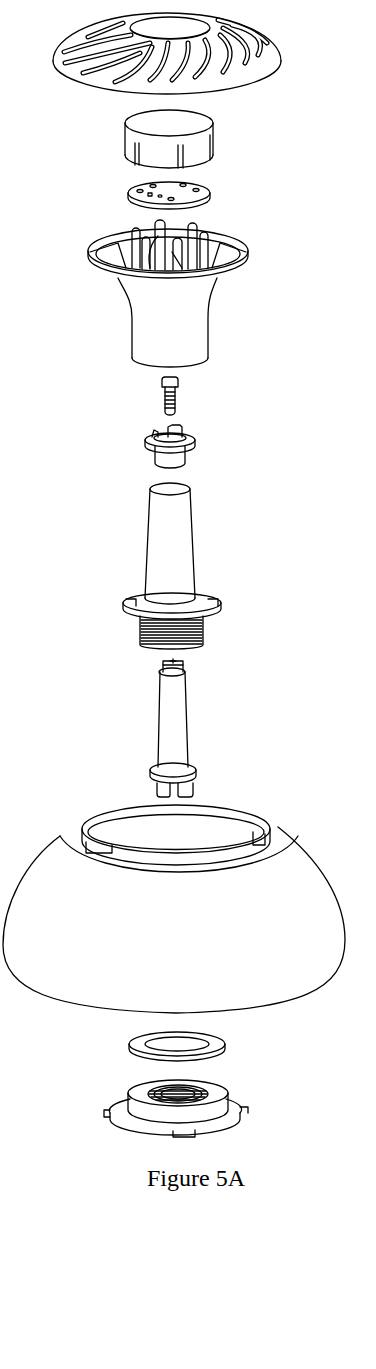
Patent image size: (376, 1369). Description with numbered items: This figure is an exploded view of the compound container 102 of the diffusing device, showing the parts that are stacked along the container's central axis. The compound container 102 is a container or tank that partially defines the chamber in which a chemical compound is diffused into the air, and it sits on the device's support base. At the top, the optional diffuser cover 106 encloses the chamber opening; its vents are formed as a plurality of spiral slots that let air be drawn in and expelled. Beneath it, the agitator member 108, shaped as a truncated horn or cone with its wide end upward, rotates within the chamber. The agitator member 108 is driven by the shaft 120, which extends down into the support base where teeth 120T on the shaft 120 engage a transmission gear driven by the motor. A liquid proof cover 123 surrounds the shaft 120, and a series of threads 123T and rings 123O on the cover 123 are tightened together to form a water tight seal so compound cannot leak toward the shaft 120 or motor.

The compound container 102 is at (328, 846).
The diffuser cover 106 is at (260, 100).
The agitator member 108 is at (231, 313).
The shaft 120 is at (240, 728).
The teeth of the shaft 120T is at (207, 785).
The liquid proof cover 123 is at (214, 530).
The threads 123T is at (216, 634).
The rings 123O is at (252, 1046).